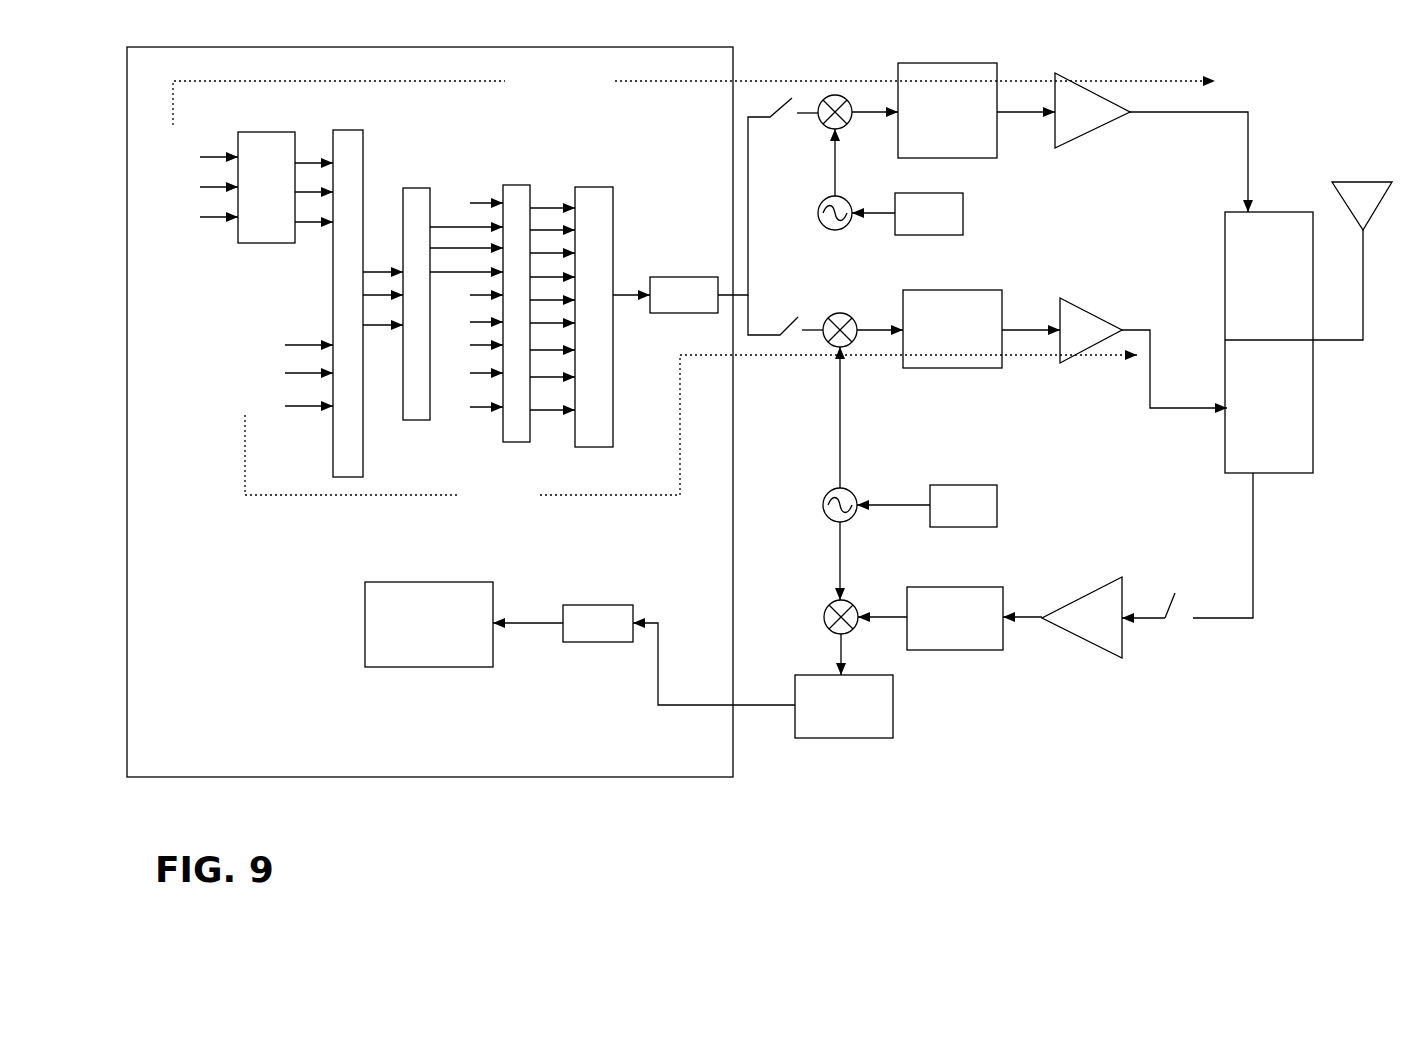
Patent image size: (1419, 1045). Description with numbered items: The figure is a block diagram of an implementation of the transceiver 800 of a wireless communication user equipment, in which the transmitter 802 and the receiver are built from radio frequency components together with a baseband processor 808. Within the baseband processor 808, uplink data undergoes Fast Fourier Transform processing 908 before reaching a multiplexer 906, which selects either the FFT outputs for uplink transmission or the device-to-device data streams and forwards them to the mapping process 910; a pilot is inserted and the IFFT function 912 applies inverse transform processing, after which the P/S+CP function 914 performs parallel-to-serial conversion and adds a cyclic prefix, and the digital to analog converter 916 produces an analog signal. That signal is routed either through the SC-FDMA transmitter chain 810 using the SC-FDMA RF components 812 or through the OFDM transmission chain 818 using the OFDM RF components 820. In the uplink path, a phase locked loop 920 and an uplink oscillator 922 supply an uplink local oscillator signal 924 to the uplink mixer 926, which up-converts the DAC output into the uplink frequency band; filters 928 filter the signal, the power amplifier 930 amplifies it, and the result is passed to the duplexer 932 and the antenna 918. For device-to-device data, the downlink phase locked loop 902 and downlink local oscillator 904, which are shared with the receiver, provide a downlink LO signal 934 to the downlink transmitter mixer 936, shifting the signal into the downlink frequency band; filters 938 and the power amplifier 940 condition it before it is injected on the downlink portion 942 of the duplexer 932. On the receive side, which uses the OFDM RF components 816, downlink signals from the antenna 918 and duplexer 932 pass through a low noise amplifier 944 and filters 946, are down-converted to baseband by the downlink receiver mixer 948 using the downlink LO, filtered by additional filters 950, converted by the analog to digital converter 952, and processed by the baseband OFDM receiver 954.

The transceiver 800 is at (770, 420).
The transmitter 802 is at (1032, 385).
The baseband processor 808 is at (430, 412).
The SC-FDMA transmitter chain 810 is at (765, 83).
The SC-FDMA RF components 812 is at (1273, 92).
The OFDM RF components 816 is at (1272, 630).
The OFDM transmission chain 818 is at (595, 497).
The OFDM RF components 820 is at (1123, 258).
The phase locked loop 902 is at (997, 503).
The downlink local oscillator 904 is at (848, 488).
The multiplexer 906 is at (355, 130).
The Fast Fourier Transform processor 908 is at (265, 132).
The mapping process 910 is at (415, 188).
The IFFT function 912 is at (520, 185).
The P/S+CP function 914 is at (593, 187).
The digital to analog converter 916 is at (693, 277).
The antenna 918 is at (1343, 177).
The phase locked loop 920 is at (963, 218).
The uplink oscillator 922 is at (837, 238).
The uplink local oscillator signal 924 is at (837, 173).
The uplink mixer 926 is at (825, 127).
The filters 928 is at (962, 63).
The power amplifier 930 is at (1083, 135).
The duplexer 932 is at (1263, 212).
The downlink LO signal 934 is at (843, 433).
The downlink transmitter mixer 936 is at (837, 313).
The filters 938 is at (960, 290).
The power amplifier 940 is at (1093, 307).
The downlink portion of the duplexer 942 is at (1282, 473).
The low noise amplifier 944 is at (1098, 580).
The filters 946 is at (955, 587).
The downlink receiver mixer 948 is at (828, 602).
The filters 950 is at (893, 705).
The analog to digital converter 952 is at (595, 605).
The baseband OFDM receiver 954 is at (412, 582).